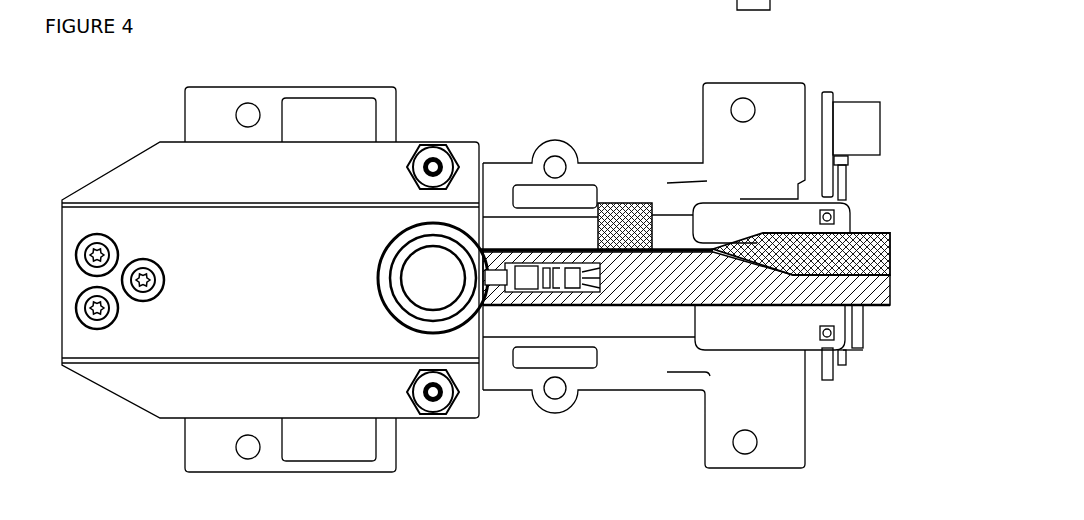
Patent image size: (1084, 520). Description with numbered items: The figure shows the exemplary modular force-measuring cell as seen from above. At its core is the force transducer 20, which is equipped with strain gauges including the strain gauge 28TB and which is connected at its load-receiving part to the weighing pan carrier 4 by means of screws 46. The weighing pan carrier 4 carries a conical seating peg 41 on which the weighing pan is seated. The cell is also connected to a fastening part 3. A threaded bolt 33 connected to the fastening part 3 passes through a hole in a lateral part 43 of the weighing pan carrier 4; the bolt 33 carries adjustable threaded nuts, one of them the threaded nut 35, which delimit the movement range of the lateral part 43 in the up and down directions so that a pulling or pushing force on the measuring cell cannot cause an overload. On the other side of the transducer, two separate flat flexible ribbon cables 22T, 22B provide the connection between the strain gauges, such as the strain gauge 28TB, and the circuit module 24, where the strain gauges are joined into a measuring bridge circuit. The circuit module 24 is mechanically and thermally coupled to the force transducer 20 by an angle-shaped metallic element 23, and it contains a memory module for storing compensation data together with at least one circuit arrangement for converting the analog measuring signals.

The weighing pan carrier 4 is at (275, 270).
The fastening part 3 is at (644, 283).
The force transducer 20 is at (565, 237).
The flexible ribbon cable 22B is at (653, 205).
The flexible ribbon cable 22T is at (808, 283).
The angle-shaped metallic element 23 is at (762, 323).
The circuit module 24 is at (853, 112).
The strain gauge 28TB is at (585, 298).
The threaded bolt 33 is at (437, 148).
The threaded nut 35 is at (425, 140).
The conical seating peg 41 is at (420, 277).
The lateral part 43 is at (345, 177).
The screws 46 is at (170, 263).